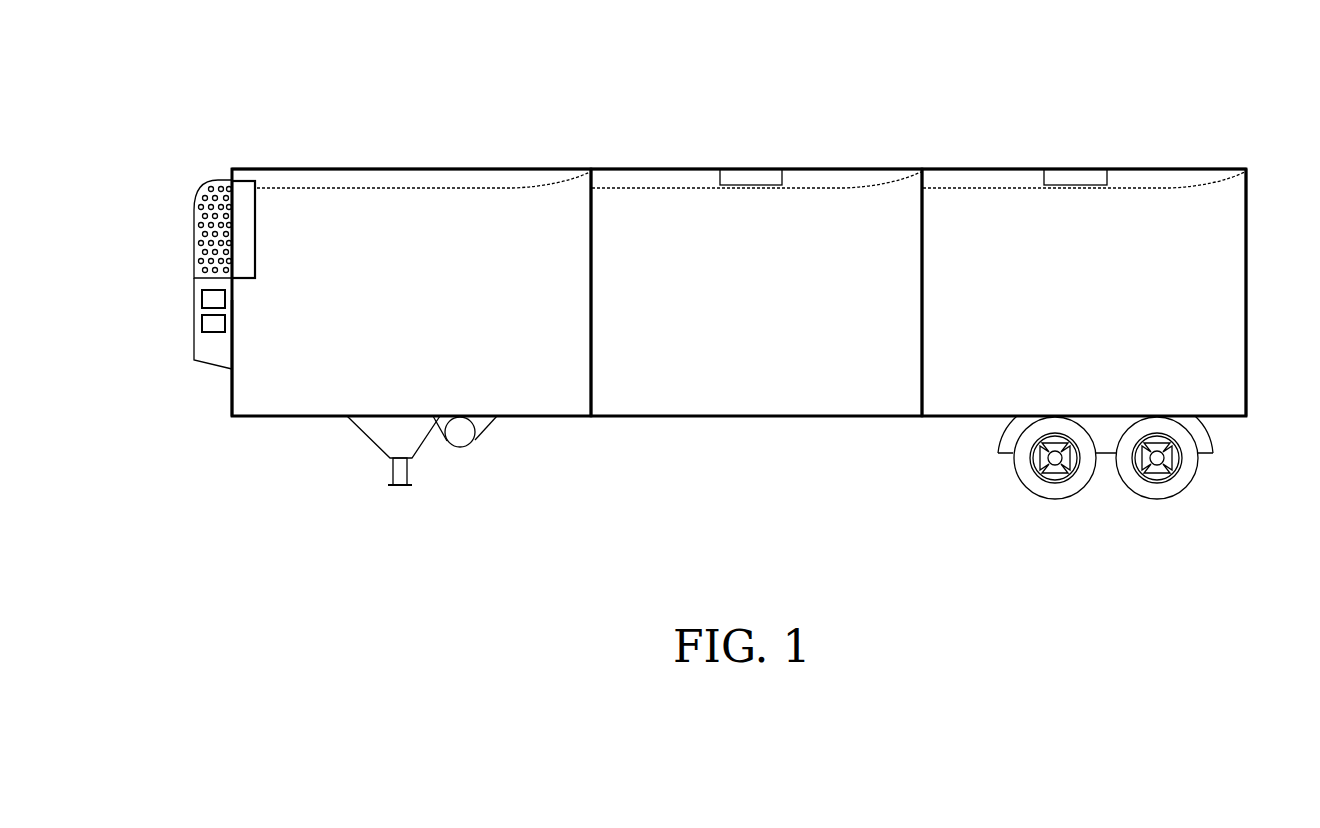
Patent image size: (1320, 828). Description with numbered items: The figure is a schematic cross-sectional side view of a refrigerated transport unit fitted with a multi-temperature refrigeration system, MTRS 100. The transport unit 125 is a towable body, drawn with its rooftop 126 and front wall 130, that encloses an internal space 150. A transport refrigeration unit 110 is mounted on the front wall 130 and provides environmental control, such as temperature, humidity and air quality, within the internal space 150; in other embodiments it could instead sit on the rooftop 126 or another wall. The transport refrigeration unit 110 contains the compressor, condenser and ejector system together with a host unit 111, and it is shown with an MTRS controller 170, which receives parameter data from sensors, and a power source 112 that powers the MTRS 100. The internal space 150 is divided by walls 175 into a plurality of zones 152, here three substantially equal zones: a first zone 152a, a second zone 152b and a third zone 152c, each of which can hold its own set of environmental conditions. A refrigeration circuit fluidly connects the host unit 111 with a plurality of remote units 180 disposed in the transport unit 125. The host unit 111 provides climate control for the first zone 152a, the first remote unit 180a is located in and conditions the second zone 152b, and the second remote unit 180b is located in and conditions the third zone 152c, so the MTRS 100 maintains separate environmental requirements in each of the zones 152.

The MTRS 100 is at (478, 86).
The transport refrigeration unit 110 is at (194, 352).
The host unit 111 is at (175, 184).
The power source 112 is at (202, 323).
The transport unit 125 is at (1203, 168).
The rooftop 126 is at (374, 168).
The front wall 130 is at (232, 392).
The internal space 150 is at (260, 372).
The zones 152 is at (1012, 498).
The first zone 152a is at (310, 370).
The second zone 152b is at (715, 370).
The third zone 152c is at (975, 370).
The MTRS controller 170 is at (202, 299).
The walls 175 is at (591, 370).
The remote units 180 is at (1117, 125).
The first remote unit 180a is at (750, 178).
The second remote unit 180b is at (1073, 178).